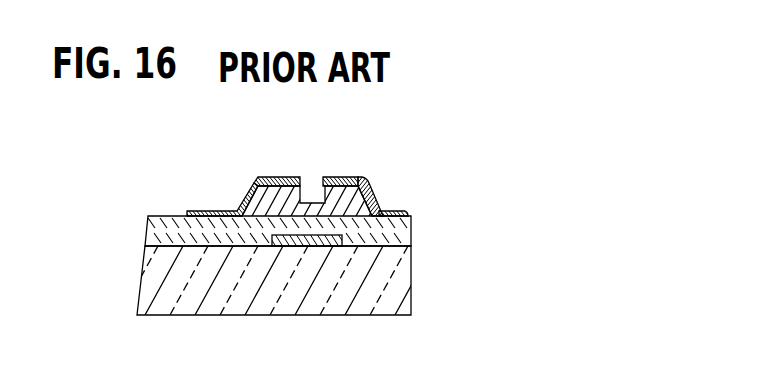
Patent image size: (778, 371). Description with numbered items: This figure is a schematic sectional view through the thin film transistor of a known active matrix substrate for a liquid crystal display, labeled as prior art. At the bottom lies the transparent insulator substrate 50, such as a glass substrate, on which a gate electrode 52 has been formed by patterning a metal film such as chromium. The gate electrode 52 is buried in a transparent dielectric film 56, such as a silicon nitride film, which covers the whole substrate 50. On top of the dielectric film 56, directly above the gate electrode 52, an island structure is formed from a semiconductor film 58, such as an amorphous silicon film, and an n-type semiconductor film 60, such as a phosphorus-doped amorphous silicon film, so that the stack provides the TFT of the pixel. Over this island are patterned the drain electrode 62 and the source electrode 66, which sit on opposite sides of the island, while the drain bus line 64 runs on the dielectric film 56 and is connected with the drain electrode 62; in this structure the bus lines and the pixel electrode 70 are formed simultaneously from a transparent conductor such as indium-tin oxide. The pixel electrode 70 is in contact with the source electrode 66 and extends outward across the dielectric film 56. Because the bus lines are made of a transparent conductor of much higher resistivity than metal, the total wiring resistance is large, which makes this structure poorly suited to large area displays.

The transparent insulator substrate 50 is at (390, 303).
The gate electrode 52 is at (293, 246).
The transparent dielectric film 56 is at (402, 237).
The semiconductor film 58 is at (250, 210).
The n-type semiconductor film 60 is at (369, 188).
The drain electrode 62 is at (283, 176).
The drain bus line 64 is at (195, 212).
The source electrode 66 is at (336, 177).
The pixel electrode 70 is at (405, 215).